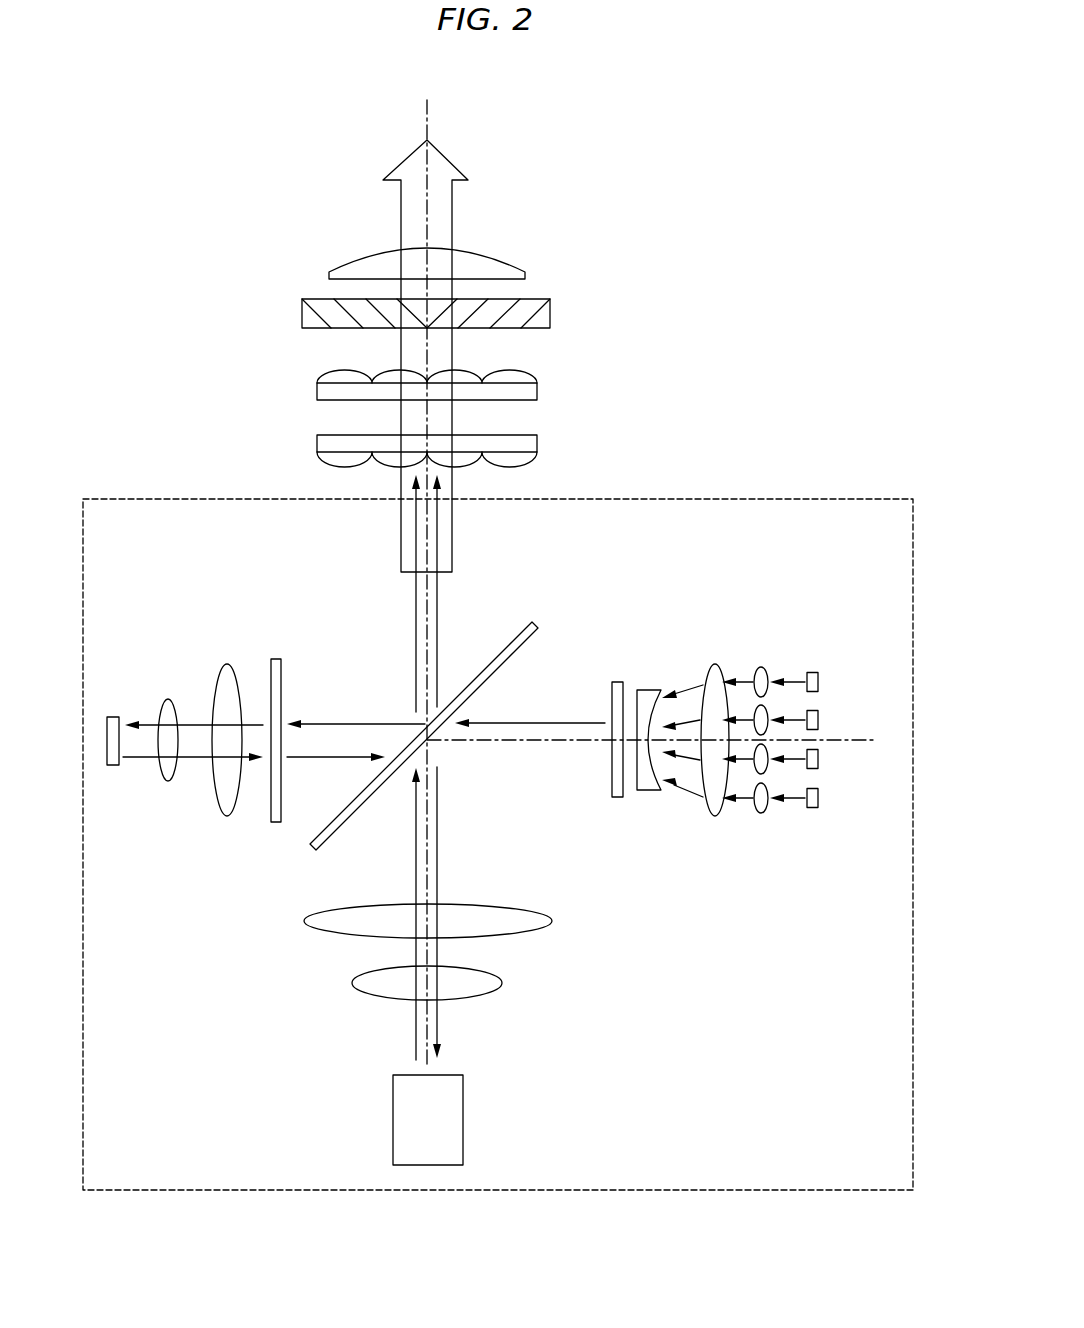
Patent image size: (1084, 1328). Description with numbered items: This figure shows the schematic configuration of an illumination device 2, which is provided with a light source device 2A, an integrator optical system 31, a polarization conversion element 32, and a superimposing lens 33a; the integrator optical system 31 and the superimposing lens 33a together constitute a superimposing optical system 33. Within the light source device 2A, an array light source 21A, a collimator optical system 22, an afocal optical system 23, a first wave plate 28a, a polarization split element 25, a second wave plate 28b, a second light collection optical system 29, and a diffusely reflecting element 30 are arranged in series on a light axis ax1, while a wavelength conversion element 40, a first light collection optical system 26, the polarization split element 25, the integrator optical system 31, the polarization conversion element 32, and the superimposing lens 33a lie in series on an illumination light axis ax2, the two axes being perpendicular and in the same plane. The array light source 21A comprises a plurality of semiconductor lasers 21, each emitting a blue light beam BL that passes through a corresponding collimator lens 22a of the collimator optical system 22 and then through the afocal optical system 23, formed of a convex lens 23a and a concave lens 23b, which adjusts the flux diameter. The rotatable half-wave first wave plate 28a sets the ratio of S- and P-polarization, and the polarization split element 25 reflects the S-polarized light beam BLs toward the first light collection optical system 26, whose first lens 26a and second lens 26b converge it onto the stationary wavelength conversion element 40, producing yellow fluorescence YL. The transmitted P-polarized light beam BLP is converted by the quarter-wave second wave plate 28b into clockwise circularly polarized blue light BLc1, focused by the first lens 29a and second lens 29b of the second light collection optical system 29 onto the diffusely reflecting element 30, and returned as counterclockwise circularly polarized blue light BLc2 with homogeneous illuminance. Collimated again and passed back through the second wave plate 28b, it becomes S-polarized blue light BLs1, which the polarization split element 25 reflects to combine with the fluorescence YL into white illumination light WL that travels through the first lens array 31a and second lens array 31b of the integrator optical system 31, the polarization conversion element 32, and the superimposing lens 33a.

The illumination device 2 is at (837, 200).
The light source device 2A is at (795, 498).
The semiconductor laser 21 is at (820, 682).
The array light source 21A is at (827, 688).
The collimator optical system 22 is at (767, 642).
The collimator lens 22a is at (761, 669).
The afocal optical system 23 is at (692, 689).
The convex lens 23a is at (716, 665).
The concave lens 23b is at (650, 690).
The polarization split element 25 is at (520, 638).
The first light collection optical system 26 is at (497, 945).
The first lens 26a is at (540, 908).
The second lens 26b is at (490, 975).
The first wave plate 28a is at (618, 682).
The second wave plate 28b is at (277, 658).
The second light collection optical system 29 is at (185, 681).
The first lens 29a is at (160, 700).
The second lens 29b is at (216, 668).
The diffusely reflecting element 30 is at (110, 716).
The integrator optical system 31 is at (526, 418).
The first lens array 31a is at (538, 442).
The second lens array 31b is at (538, 392).
The polarization conversion element 32 is at (552, 313).
The superimposing optical system 33 is at (526, 353).
The superimposing lens 33a is at (525, 266).
The wavelength conversion element 40 is at (370, 1110).
The illumination light WL is at (400, 222).
The fluorescence YL is at (417, 620).
The light beam BL is at (565, 722).
The light beam BLs is at (440, 875).
The blue light BLs1 is at (440, 600).
The light beam BLp BLP is at (330, 722).
The blue light BLc1 is at (256, 722).
The blue light BLc2 is at (245, 760).
The light axis ax1 is at (848, 742).
The illumination light axis ax2 is at (427, 103).